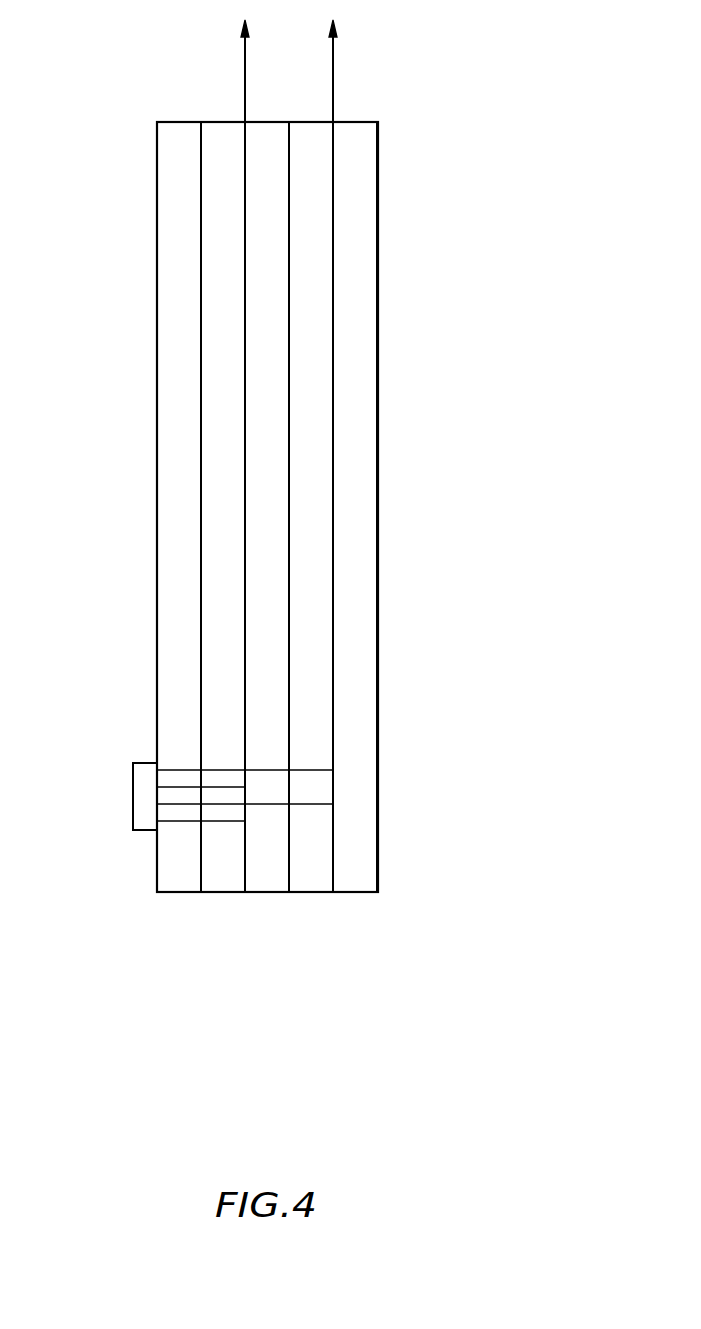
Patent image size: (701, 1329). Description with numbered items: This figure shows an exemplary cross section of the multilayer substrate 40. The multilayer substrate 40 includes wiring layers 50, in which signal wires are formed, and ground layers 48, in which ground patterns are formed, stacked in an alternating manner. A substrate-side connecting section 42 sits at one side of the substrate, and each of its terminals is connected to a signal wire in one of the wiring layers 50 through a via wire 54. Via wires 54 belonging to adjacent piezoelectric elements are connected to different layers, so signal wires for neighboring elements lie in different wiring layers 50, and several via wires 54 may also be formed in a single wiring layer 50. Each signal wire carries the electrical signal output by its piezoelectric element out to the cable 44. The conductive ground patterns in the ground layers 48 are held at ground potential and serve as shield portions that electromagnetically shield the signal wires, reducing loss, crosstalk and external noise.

The multilayer substrate 40 is at (280, 1098).
The substrate-side connecting section 42 is at (133, 795).
The cable 44 is at (245, 80).
The ground layer 48 is at (201, 898).
The wiring layer 50 is at (157, 898).
The via wire 54 is at (178, 822).